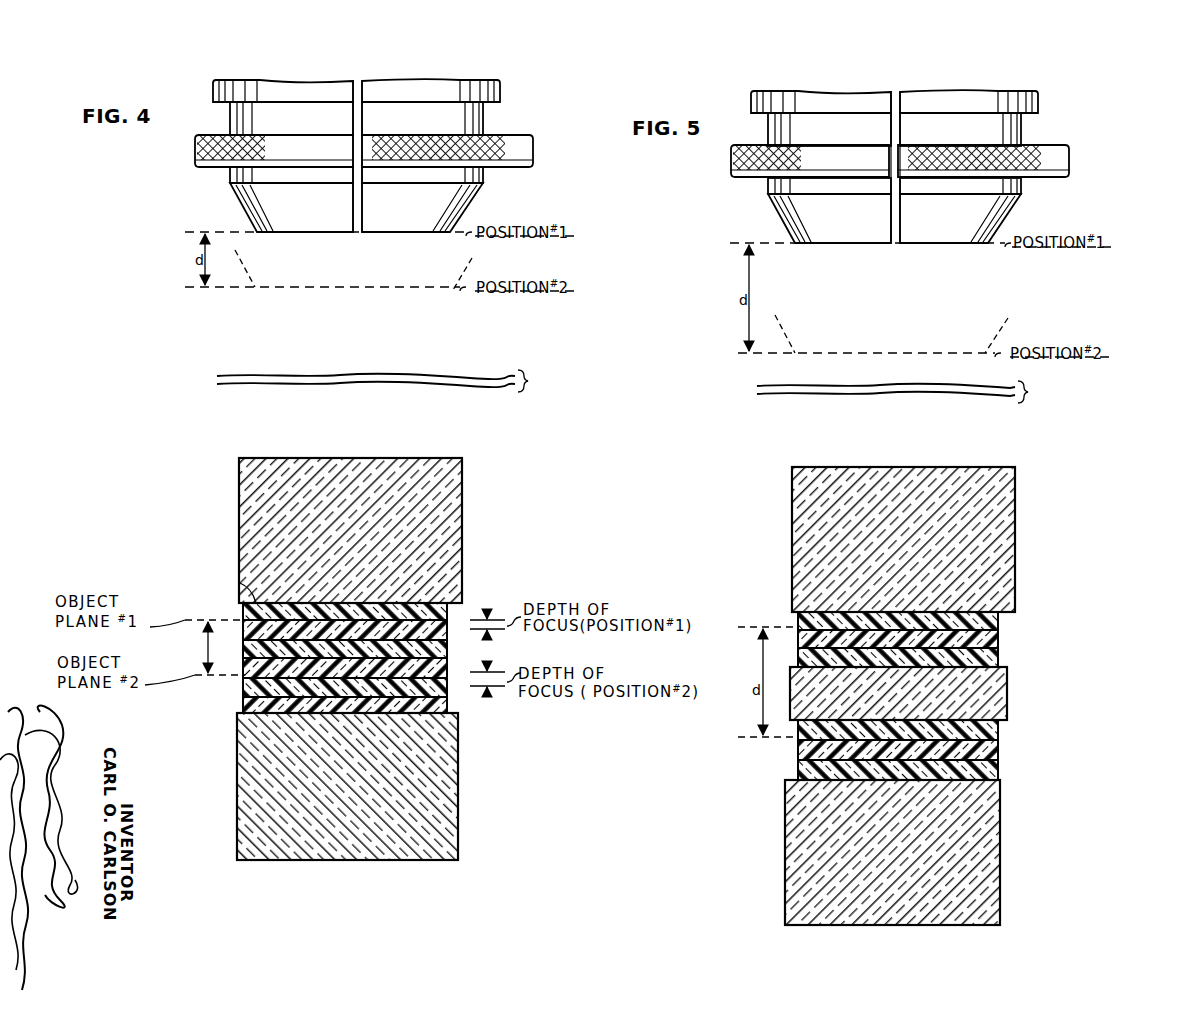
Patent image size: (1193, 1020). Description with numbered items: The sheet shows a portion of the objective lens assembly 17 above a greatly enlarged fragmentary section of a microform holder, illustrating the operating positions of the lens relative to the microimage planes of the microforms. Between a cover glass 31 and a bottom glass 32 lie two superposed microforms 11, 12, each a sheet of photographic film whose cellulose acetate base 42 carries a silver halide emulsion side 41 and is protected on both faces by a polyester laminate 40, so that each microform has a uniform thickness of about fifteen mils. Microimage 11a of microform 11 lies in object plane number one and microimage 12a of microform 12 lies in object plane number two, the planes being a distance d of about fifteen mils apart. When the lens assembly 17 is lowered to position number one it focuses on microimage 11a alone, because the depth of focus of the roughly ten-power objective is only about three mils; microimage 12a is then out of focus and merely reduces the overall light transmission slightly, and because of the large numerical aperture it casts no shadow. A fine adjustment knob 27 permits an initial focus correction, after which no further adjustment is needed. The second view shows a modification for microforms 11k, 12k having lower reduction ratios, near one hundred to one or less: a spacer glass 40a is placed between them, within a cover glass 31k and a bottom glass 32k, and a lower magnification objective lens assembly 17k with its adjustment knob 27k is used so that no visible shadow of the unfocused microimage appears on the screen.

In FIG. 4, the objective lens assembly 17 is at (227, 192).
In FIG. 4, the fine adjustment knob 27 is at (536, 153).
In FIG. 4, the cover glass 31 is at (450, 507).
In FIG. 4, the microform 11 is at (352, 605).
In FIG. 4, the microimage 11a is at (390, 610).
In FIG. 4, the silver halide emulsion side 41 is at (240, 583).
In FIG. 4, the cellulose acetate base 42 is at (219, 647).
In FIG. 4, the polyester laminate 40 is at (460, 658).
In FIG. 4, the microform 12 is at (370, 697).
In FIG. 4, the microimage 12a is at (385, 699).
In FIG. 4, the bottom glass 32 is at (450, 801).
In FIG. 5, the lower magnification objective lens assembly 17k is at (783, 220).
In FIG. 5, the knurled focusing ring 27k is at (1070, 162).
In FIG. 5, the cover glass 31k is at (1010, 528).
In FIG. 5, the microform 11k is at (990, 615).
In FIG. 5, the spacer glass 40a is at (970, 712).
In FIG. 5, the microform 12k is at (985, 736).
In FIG. 5, the bottom glass 32k is at (990, 820).